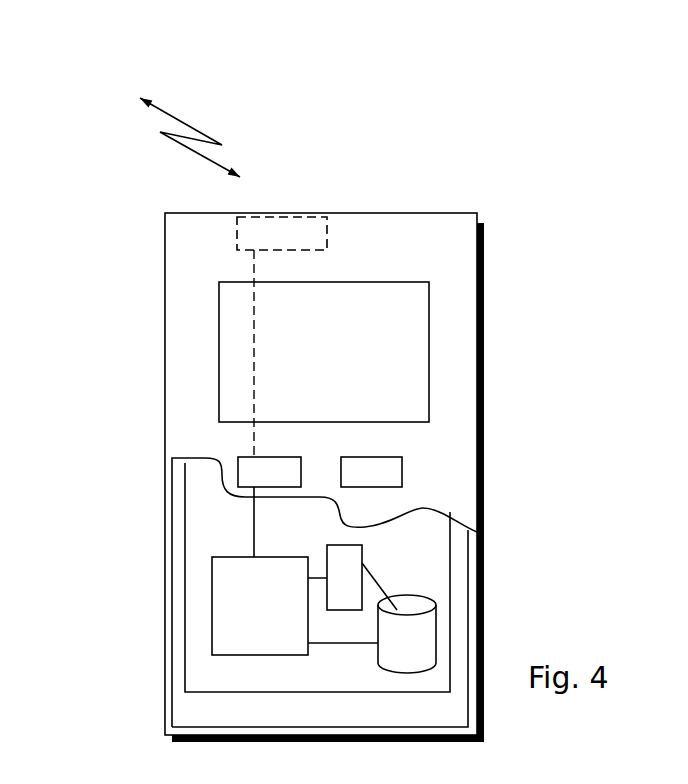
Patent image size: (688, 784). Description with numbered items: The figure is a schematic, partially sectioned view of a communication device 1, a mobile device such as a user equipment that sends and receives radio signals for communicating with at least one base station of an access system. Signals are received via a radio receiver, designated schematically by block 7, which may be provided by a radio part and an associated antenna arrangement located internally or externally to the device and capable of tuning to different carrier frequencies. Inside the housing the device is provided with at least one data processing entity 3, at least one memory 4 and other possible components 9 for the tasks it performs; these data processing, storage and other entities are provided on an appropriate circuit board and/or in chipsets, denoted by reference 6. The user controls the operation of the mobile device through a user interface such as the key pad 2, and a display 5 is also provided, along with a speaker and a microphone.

The communication device 1 is at (165, 257).
The key pad 2 is at (245, 472).
The data processing entity 3 is at (218, 589).
The memory 4 is at (402, 647).
The display 5 is at (237, 340).
The circuit board 6 is at (212, 675).
The receiver 7 is at (263, 232).
The other components 9 is at (343, 562).